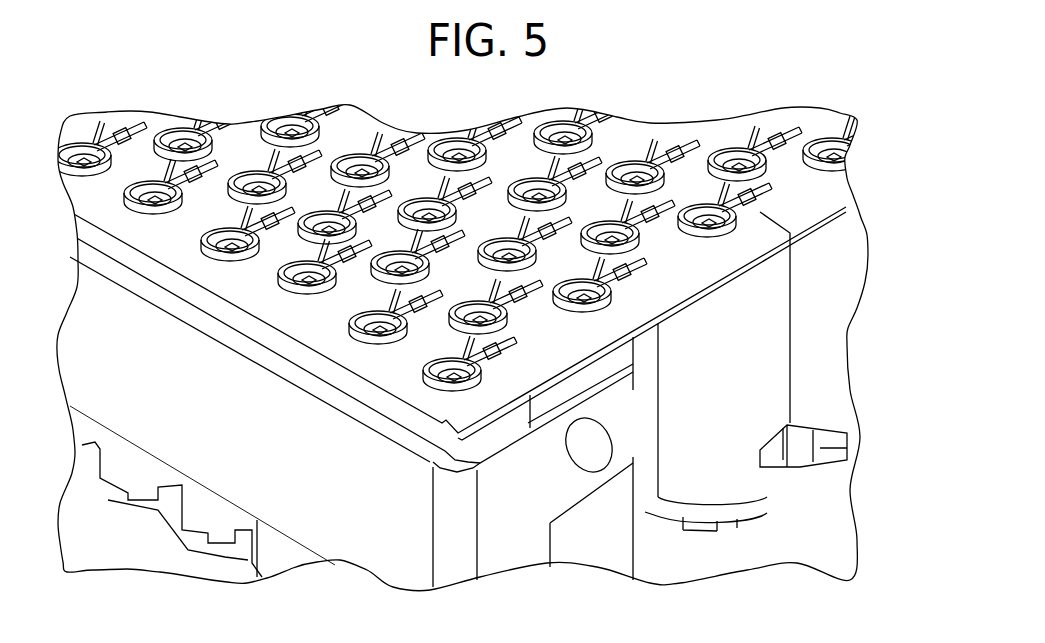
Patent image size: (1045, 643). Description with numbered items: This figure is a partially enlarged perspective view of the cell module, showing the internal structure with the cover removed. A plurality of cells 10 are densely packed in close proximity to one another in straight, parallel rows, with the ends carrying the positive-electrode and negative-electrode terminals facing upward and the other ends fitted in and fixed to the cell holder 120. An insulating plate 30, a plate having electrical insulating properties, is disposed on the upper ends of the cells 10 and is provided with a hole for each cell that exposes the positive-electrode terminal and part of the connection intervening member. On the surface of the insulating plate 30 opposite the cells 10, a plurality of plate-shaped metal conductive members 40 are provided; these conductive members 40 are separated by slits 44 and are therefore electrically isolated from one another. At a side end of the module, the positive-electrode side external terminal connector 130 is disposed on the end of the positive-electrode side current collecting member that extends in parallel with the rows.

The cell 10 is at (825, 403).
The insulating plate 30 is at (852, 222).
The conductive member 40 is at (832, 193).
The slit 44 is at (663, 292).
The cell holder 120 is at (722, 527).
The positive-electrode side external terminal connector 130 is at (508, 550).